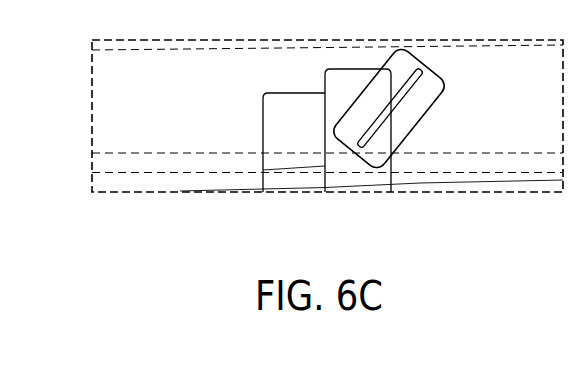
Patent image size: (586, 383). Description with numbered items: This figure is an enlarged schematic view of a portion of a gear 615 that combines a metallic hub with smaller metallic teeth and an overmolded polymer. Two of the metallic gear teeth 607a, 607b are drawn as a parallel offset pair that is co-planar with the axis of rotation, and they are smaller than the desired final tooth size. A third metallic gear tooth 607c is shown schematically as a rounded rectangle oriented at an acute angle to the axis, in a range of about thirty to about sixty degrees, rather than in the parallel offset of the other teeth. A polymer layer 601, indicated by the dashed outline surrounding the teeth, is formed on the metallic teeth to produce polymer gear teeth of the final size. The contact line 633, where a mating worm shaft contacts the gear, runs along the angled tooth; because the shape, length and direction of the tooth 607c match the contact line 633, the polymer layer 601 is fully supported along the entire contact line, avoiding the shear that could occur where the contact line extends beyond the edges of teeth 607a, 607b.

The polymer layer 601 is at (103, 96).
The metallic gear tooth 607a is at (275, 122).
The metallic gear tooth 607b is at (342, 181).
The metallic gear tooth 607c is at (448, 87).
The contact line 633 is at (395, 107).
The gear 615 is at (468, 202).